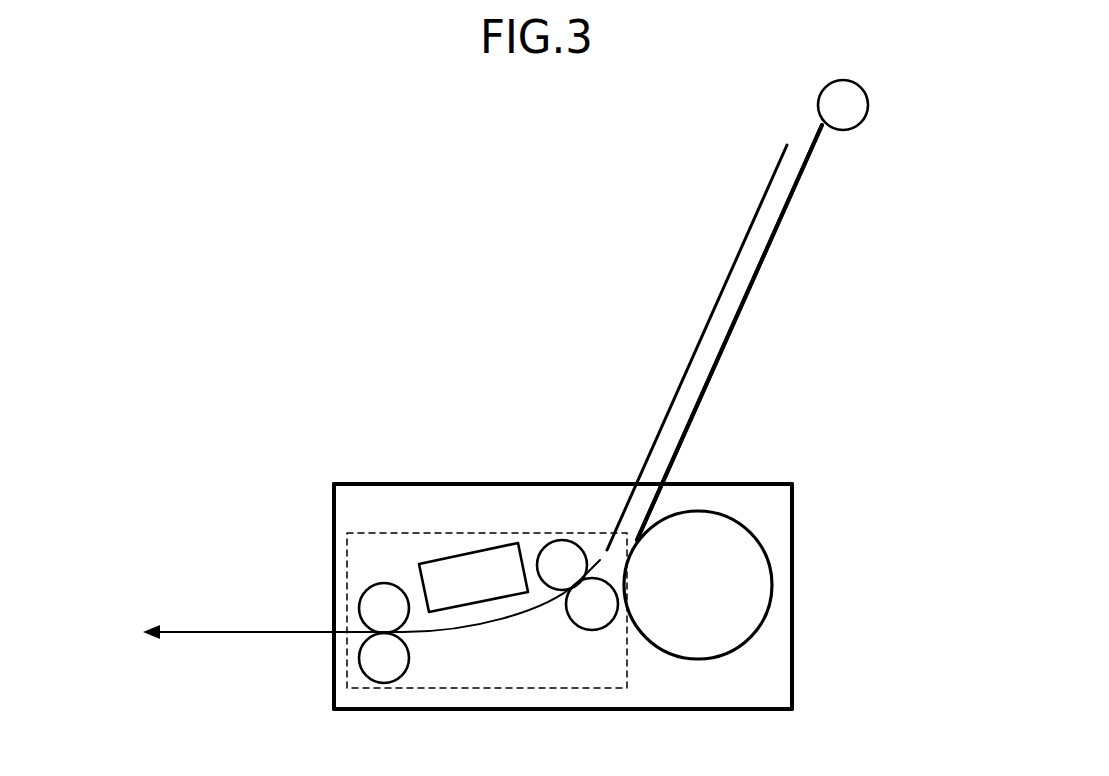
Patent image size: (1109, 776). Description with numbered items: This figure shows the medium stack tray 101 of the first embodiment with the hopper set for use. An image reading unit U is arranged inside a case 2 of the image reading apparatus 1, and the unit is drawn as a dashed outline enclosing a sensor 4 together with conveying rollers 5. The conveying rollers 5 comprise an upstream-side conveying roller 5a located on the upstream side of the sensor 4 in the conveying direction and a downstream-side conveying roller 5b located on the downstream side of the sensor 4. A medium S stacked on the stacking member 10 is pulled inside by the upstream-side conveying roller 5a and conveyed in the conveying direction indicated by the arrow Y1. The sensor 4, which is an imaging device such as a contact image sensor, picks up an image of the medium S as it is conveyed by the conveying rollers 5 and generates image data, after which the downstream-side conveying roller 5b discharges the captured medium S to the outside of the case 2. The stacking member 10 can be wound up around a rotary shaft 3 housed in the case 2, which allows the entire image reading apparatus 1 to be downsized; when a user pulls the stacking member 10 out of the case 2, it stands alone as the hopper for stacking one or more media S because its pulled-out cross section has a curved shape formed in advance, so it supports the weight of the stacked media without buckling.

The image reading apparatus 1 is at (338, 421).
The case 2 is at (743, 484).
The rotary shaft 3 is at (773, 585).
The sensor 4 is at (440, 559).
The conveying rollers 5 is at (440, 545).
The upstream-side conveying roller 5a is at (555, 530).
The downstream-side conveying roller 5b is at (365, 576).
The image reading unit U is at (480, 533).
The conveying direction arrow Y1 is at (196, 630).
The medium S is at (714, 305).
The stacking member 10 is at (742, 306).
The medium stack tray 101 is at (810, 227).